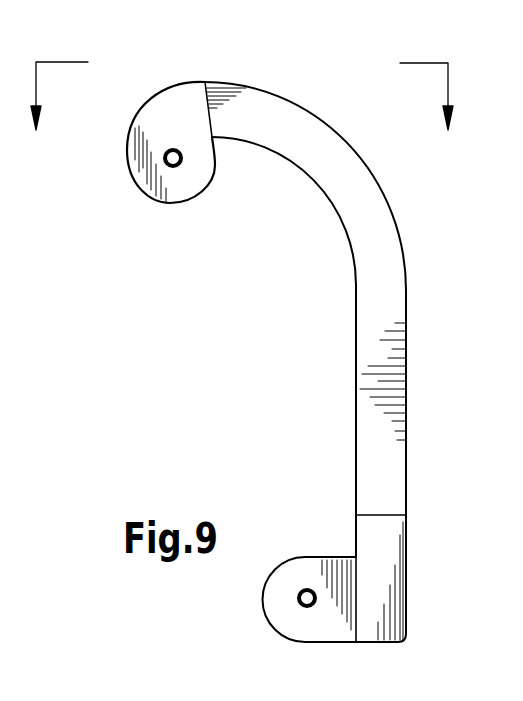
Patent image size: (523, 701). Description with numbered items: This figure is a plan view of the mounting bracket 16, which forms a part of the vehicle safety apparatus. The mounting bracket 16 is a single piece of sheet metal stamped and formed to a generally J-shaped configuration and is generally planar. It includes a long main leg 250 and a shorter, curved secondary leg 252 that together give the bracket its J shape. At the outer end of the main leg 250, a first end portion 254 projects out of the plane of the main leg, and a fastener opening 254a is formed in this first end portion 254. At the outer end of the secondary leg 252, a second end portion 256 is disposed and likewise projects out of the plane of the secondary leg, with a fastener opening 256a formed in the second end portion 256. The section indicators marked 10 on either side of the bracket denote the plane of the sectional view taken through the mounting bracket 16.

The section line 10- 10 is at (245, 111).
The mounting bracket 16 is at (176, 373).
The main leg 250 is at (372, 347).
The secondary leg 252 is at (255, 120).
The first end portion 254 is at (320, 622).
The fastener opening 254a is at (307, 596).
The second end portion 256 is at (207, 192).
The fastener opening 256a is at (173, 158).